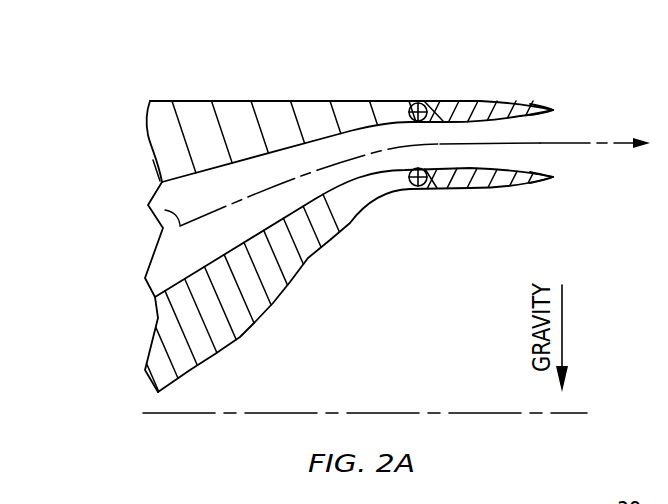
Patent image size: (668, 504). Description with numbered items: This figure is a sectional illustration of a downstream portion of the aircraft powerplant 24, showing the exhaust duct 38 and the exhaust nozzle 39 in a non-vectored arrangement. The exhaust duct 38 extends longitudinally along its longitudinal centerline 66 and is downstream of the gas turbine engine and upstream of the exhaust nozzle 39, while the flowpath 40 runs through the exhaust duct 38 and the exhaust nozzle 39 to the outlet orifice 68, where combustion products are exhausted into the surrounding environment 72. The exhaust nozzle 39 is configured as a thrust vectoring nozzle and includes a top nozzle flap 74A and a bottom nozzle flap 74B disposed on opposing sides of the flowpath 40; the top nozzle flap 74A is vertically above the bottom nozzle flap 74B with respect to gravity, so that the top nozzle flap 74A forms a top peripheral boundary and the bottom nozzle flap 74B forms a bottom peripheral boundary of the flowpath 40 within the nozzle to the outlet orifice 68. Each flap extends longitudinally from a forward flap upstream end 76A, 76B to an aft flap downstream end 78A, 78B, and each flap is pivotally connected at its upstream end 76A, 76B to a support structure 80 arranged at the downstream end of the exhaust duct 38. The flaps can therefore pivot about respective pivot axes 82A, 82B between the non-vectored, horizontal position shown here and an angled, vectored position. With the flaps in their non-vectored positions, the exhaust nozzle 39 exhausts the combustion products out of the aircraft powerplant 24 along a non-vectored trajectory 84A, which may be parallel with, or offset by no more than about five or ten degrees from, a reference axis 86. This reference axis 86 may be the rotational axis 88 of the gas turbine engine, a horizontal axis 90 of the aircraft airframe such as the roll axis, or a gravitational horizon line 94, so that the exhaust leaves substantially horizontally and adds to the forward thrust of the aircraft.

The aircraft powerplant 24 is at (128, 81).
The exhaust duct 38 is at (295, 133).
The exhaust nozzle 39 is at (460, 92).
The flowpath 40 is at (166, 272).
The longitudinal centerline 66 is at (150, 212).
The outlet orifice 68 is at (537, 128).
The environment 72 is at (595, 77).
The top nozzle flap 74A is at (493, 101).
The bottom nozzle flap 74B is at (465, 190).
The flap upstream end 76A is at (418, 102).
The flap upstream end 76B is at (418, 190).
The flap downstream end 78A is at (553, 110).
The flap downstream end 78B is at (553, 177).
The support structure 80 is at (382, 94).
The pivot axis 82A is at (430, 101).
The pivot axis 82B is at (433, 190).
The non-vectored trajectory 84A is at (617, 146).
The reference axis 86 is at (354, 458).
The rotational axis 88 is at (354, 458).
The horizontal axis 90 is at (354, 458).
The gravitational horizon line 94 is at (163, 413).